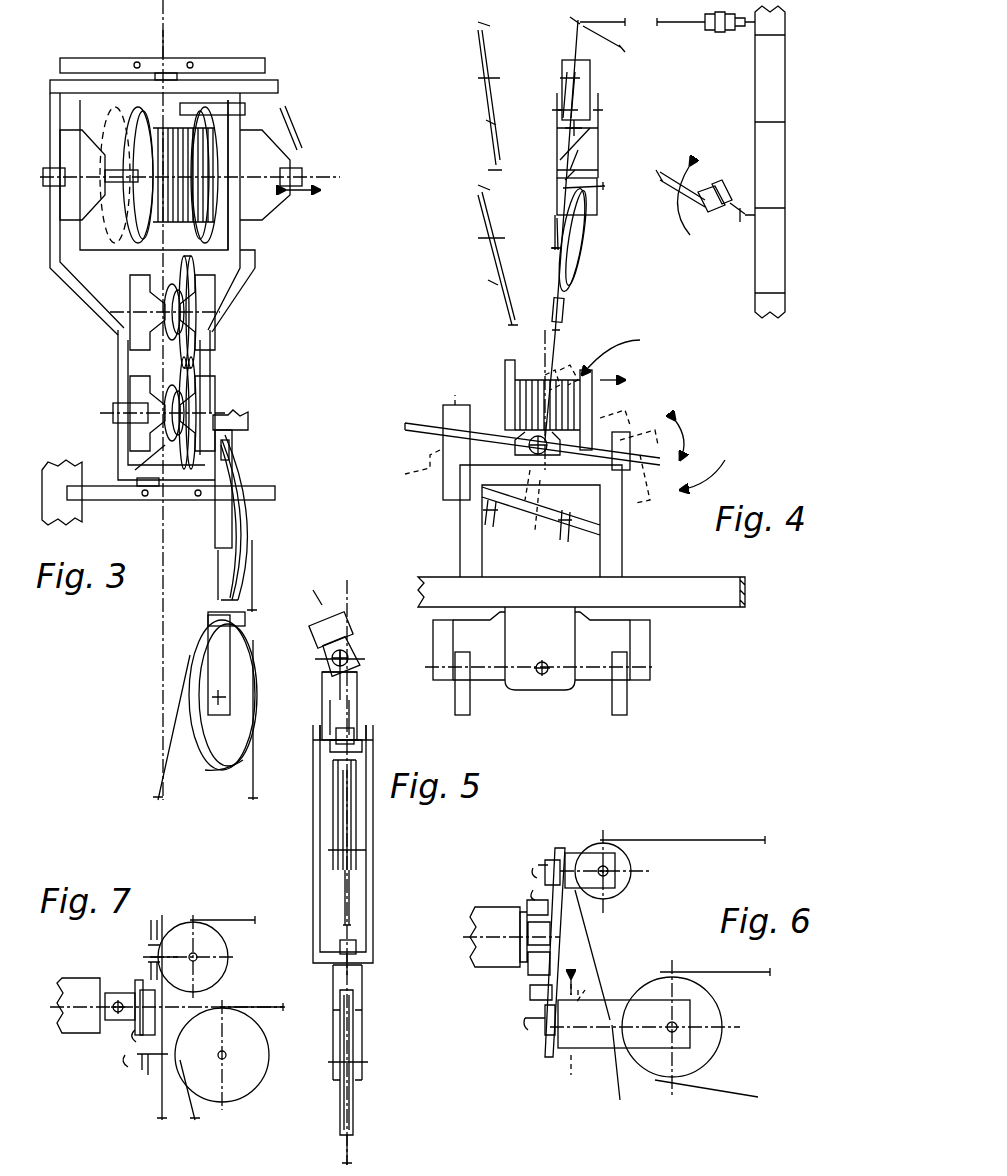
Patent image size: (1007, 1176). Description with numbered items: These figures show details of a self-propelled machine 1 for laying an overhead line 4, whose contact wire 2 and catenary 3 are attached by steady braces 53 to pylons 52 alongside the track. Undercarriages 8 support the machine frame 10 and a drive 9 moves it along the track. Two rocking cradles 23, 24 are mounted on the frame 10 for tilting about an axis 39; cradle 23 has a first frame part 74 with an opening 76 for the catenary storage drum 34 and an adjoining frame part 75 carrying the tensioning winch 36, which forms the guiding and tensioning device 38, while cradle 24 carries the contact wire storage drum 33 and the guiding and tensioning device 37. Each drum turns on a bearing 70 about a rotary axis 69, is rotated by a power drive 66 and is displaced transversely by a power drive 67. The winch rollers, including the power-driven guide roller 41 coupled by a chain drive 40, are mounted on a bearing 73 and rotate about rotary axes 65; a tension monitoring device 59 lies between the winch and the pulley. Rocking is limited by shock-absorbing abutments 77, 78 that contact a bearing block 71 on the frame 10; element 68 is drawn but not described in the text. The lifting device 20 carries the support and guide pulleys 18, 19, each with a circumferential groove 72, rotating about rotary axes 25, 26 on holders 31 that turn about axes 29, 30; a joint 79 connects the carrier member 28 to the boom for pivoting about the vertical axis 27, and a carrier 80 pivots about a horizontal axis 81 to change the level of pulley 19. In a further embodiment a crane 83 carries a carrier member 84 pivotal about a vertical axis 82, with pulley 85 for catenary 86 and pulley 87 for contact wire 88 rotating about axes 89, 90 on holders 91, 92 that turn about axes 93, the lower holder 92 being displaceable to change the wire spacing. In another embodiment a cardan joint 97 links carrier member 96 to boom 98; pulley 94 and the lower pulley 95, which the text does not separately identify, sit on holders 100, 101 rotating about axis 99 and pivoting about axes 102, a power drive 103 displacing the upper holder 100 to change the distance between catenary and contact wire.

In FIG. 4, the self-propelled machine 1 is at (710, 462).
In FIG. 3, the contact wire 2 is at (178, 740).
In FIG. 4, the contact wire 2 is at (553, 345).
In FIG. 3, the catenary cable 3 is at (254, 594).
In FIG. 4, the catenary cable 3 is at (560, 178).
In FIG. 5, the catenary cable 3 is at (356, 936).
In FIG. 4, the overhead line 4 is at (705, 211).
In FIG. 4, the undercarriages 8 is at (627, 698).
In FIG. 4, the drive 9 is at (555, 690).
In FIG. 3, the machine frame 10 is at (58, 470).
In FIG. 4, the machine frame 10 is at (718, 607).
In FIG. 3, the support and guide pulley 18 is at (222, 570).
In FIG. 4, the support and guide pulley 18 is at (490, 128).
In FIG. 5, the support and guide pulley 18 is at (352, 918).
In FIG. 3, the support and guide pulley 19 is at (205, 663).
In FIG. 4, the support and guide pulley 19 is at (483, 230).
In FIG. 5, the support and guide pulley 19 is at (355, 1105).
In FIG. 3, the lifting device 20 is at (250, 422).
In FIG. 5, the lifting device 20 is at (332, 615).
In FIG. 3, the cradle 23 is at (93, 320).
In FIG. 4, the cradle 24 is at (445, 500).
In FIG. 3, the rotary axis 25 is at (223, 535).
In FIG. 4, the rotary axis 25 is at (562, 80).
In FIG. 5, the rotary axis 25 is at (360, 855).
In FIG. 3, the rotary axis 26 is at (210, 697).
In FIG. 4, the rotary axis 26 is at (585, 245).
In FIG. 5, the rotary axis 26 is at (358, 1065).
In FIG. 4, the vertical axis 27 is at (580, 128).
In FIG. 5, the vertical axis 27 is at (336, 664).
In FIG. 4, the carrier member 28 is at (600, 142).
In FIG. 5, the carrier member 28 is at (330, 695).
In FIG. 5, the axis 29 is at (348, 730).
In FIG. 4, the axis 30 is at (580, 170).
In FIG. 5, the axis 30 is at (362, 972).
In FIG. 3, the holders 31 is at (234, 455).
In FIG. 4, the holders 31 is at (563, 65).
In FIG. 5, the holders 31 is at (356, 848).
In FIG. 4, the storage drum 33 is at (508, 380).
In FIG. 3, the storage drum 34 is at (208, 230).
In FIG. 3, the winch 36 is at (210, 400).
In FIG. 4, the guiding and tensioning device 37 is at (607, 355).
In FIG. 3, the guiding and tensioning device 38 is at (210, 340).
In FIG. 3, the tilting axis 39 is at (165, 52).
In FIG. 4, the tilting axis 39 is at (530, 440).
In FIG. 3, the chain drive 40 is at (188, 358).
In FIG. 3, the power-driven guide roller 41 is at (170, 448).
In FIG. 4, the power-driven guide roller 41 is at (538, 510).
In FIG. 4, the pylons 52 is at (758, 100).
In FIG. 4, the steady brace 53 is at (615, 45).
In FIG. 4, the tension monitoring device 59 is at (565, 310).
In FIG. 3, the rotary axes 65 is at (113, 413).
In FIG. 3, the power drive 66 is at (62, 192).
In FIG. 3, the power drive 67 is at (218, 105).
In FIG. 3, the tension lever 68 is at (292, 150).
In FIG. 3, the rotary axis 69 is at (308, 175).
In FIG. 4, the rotary axis 69 is at (445, 425).
In FIG. 3, the bearing 70 is at (75, 145).
In FIG. 4, the bearing 70 is at (615, 432).
In FIG. 3, the bearing block 71 is at (242, 60).
In FIG. 4, the bearing block 71 is at (610, 542).
In FIG. 3, the circumferential groove 72 is at (243, 760).
In FIG. 3, the bearing 73 is at (138, 440).
In FIG. 3, the first frame part 74 is at (255, 230).
In FIG. 3, the frame part 75 is at (118, 368).
In FIG. 3, the opening 76 is at (88, 108).
In FIG. 4, the shock-absorbing abutment 77 is at (488, 520).
In FIG. 4, the shock-absorbing abutment 78 is at (565, 530).
In FIG. 5, the joint 79 is at (344, 652).
In FIG. 5, the carrier 80 is at (315, 897).
In FIG. 5, the horizontal axis 81 is at (366, 740).
In FIG. 6, the vertical axis 82 is at (532, 985).
In FIG. 6, the crane 83 is at (495, 918).
In FIG. 6, the carrier member 84 is at (560, 848).
In FIG. 6, the pulley 85 is at (628, 866).
In FIG. 6, the catenary 86 is at (702, 840).
In FIG. 6, the pulley 87 is at (652, 990).
In FIG. 6, the contact wire 88 is at (745, 972).
In FIG. 6, the axis 89 is at (612, 885).
In FIG. 6, the axis 90 is at (680, 1032).
In FIG. 6, the pulley holder 91 is at (608, 853).
In FIG. 6, the pulley holder 92 is at (595, 1048).
In FIG. 6, the axis 93 is at (548, 860).
In FIG. 7, the support and guide pulley 94 is at (210, 947).
In FIG. 7, the lower pulley 95 is at (228, 1085).
In FIG. 7, the carrier member 96 is at (143, 1040).
In FIG. 7, the cardan joint 97 is at (115, 998).
In FIG. 7, the boom 98 is at (75, 1032).
In FIG. 7, the axis 99 is at (225, 1057).
In FIG. 7, the holder 100 is at (172, 950).
In FIG. 7, the holder 101 is at (155, 1065).
In FIG. 7, the pivoting axes 102 is at (135, 1070).
In FIG. 7, the power drive 103 is at (155, 1010).